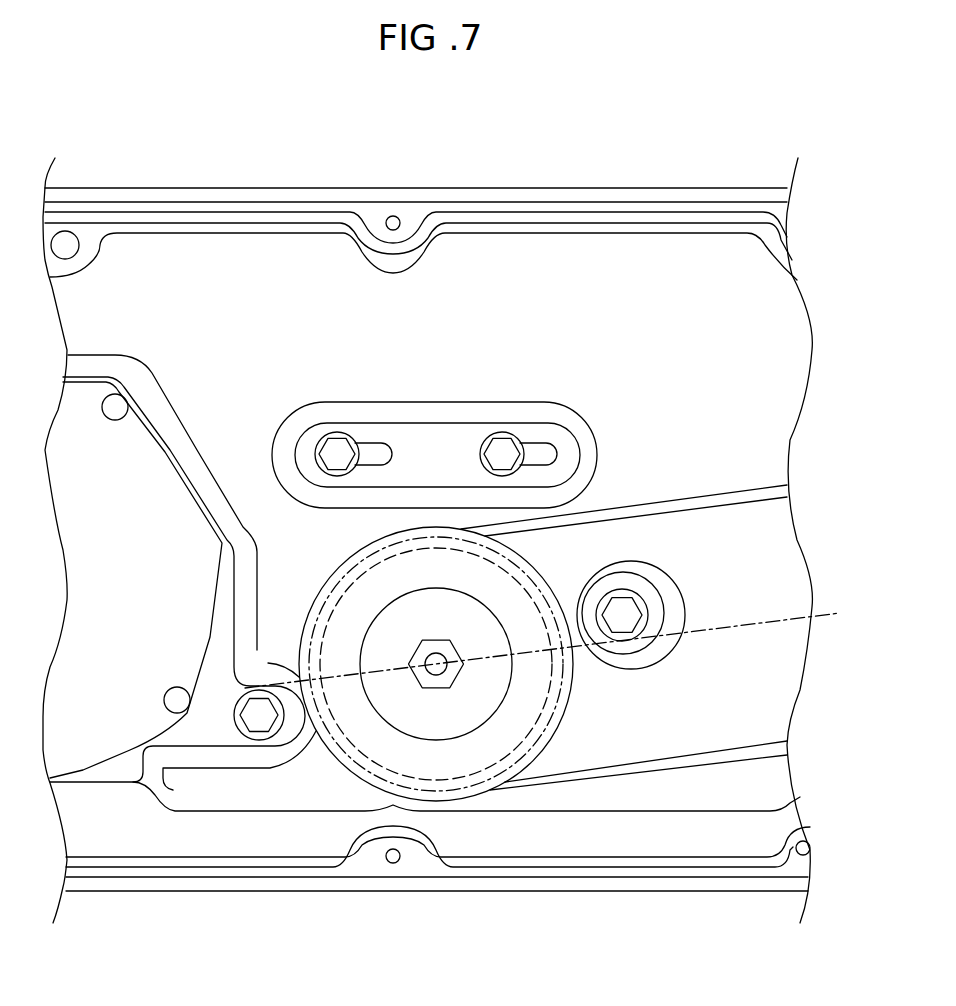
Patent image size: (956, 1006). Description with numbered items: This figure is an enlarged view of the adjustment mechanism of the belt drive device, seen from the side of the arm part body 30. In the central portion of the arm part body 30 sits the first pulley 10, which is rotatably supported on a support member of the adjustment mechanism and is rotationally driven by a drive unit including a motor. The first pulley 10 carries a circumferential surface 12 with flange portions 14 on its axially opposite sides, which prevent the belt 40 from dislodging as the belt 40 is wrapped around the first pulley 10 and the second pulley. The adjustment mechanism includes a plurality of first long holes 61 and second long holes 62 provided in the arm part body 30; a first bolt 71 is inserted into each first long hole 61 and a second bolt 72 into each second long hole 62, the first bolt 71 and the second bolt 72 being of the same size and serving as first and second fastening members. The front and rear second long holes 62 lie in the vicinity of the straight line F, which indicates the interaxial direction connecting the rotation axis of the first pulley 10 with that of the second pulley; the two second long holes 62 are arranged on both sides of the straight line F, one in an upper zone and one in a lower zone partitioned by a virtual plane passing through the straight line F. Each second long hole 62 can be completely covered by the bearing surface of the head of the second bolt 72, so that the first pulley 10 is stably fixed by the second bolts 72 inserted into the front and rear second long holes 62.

The first pulley 10 is at (553, 723).
The circumferential surface 12 is at (523, 580).
The flange portions 14 is at (570, 690).
The arm part body 30 is at (114, 188).
The belt 40 is at (742, 492).
The first long holes 61 is at (377, 448).
The second long holes 62 is at (640, 600).
The first bolt 71 is at (337, 434).
The second bolt 72 is at (622, 597).
The straight line F is at (690, 637).